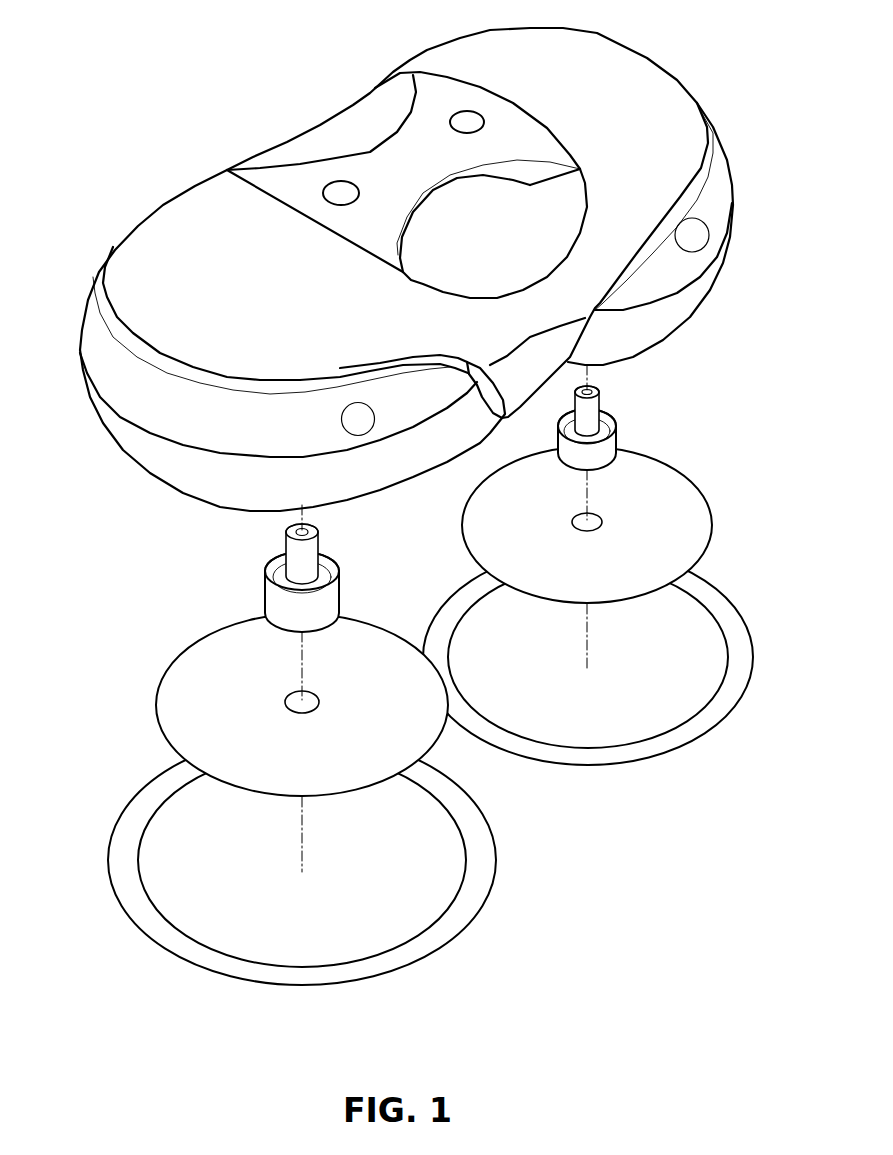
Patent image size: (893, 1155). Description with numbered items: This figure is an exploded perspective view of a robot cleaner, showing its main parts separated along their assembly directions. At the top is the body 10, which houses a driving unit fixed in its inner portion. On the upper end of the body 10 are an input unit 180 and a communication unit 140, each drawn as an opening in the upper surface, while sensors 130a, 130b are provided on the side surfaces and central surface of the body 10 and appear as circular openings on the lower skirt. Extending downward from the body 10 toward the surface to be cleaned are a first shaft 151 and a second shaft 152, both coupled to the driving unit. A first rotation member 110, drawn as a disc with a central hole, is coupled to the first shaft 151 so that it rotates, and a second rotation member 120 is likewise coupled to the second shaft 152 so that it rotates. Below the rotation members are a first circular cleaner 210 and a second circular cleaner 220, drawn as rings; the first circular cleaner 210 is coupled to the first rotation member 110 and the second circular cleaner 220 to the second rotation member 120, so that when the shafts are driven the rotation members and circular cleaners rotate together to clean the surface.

The body 10 is at (422, 274).
The first rotation member 110 is at (183, 648).
The second rotation member 120 is at (695, 482).
The sensor 130a is at (360, 436).
The sensor 130b is at (697, 252).
The communication unit 140 is at (467, 108).
The first shaft 151 is at (332, 602).
The second shaft 152 is at (610, 440).
The input unit 180 is at (338, 178).
The first circular cleaner 210 is at (122, 910).
The second circular cleaner 220 is at (606, 766).